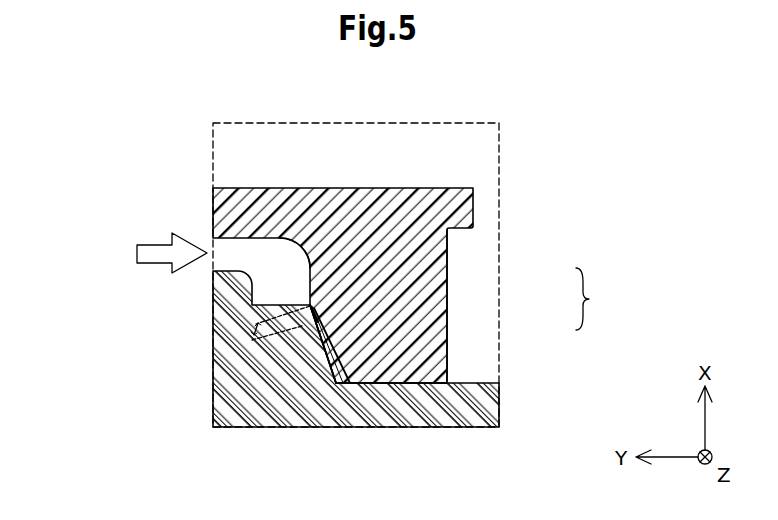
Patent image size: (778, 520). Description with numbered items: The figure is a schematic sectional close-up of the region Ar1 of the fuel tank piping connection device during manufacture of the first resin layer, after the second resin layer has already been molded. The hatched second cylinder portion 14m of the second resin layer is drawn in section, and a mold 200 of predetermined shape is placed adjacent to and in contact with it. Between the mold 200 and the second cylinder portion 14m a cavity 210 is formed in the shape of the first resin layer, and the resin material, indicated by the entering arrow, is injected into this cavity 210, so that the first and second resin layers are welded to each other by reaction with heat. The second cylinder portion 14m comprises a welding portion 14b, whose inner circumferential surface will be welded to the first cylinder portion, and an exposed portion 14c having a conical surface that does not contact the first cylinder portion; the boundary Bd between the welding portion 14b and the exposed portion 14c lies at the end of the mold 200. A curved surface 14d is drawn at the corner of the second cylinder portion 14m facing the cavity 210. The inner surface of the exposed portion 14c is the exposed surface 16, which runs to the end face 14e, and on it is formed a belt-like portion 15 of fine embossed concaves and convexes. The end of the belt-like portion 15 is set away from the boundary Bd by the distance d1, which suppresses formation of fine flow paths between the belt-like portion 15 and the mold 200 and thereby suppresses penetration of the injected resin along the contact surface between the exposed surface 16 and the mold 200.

The welding portion 14b is at (263, 195).
The exposed portion 14c is at (398, 337).
The curved surface of terminal 14d is at (303, 232).
The end face 14e is at (412, 383).
The second cylinder portion 14m is at (606, 299).
The belt-like portion 15 is at (318, 312).
The exposed surface 16 is at (311, 316).
The mold 200 is at (222, 383).
The cavity 210 is at (213, 245).
The region Ar1 is at (500, 183).
The boundary Bd is at (298, 330).
The distance d1 is at (265, 330).